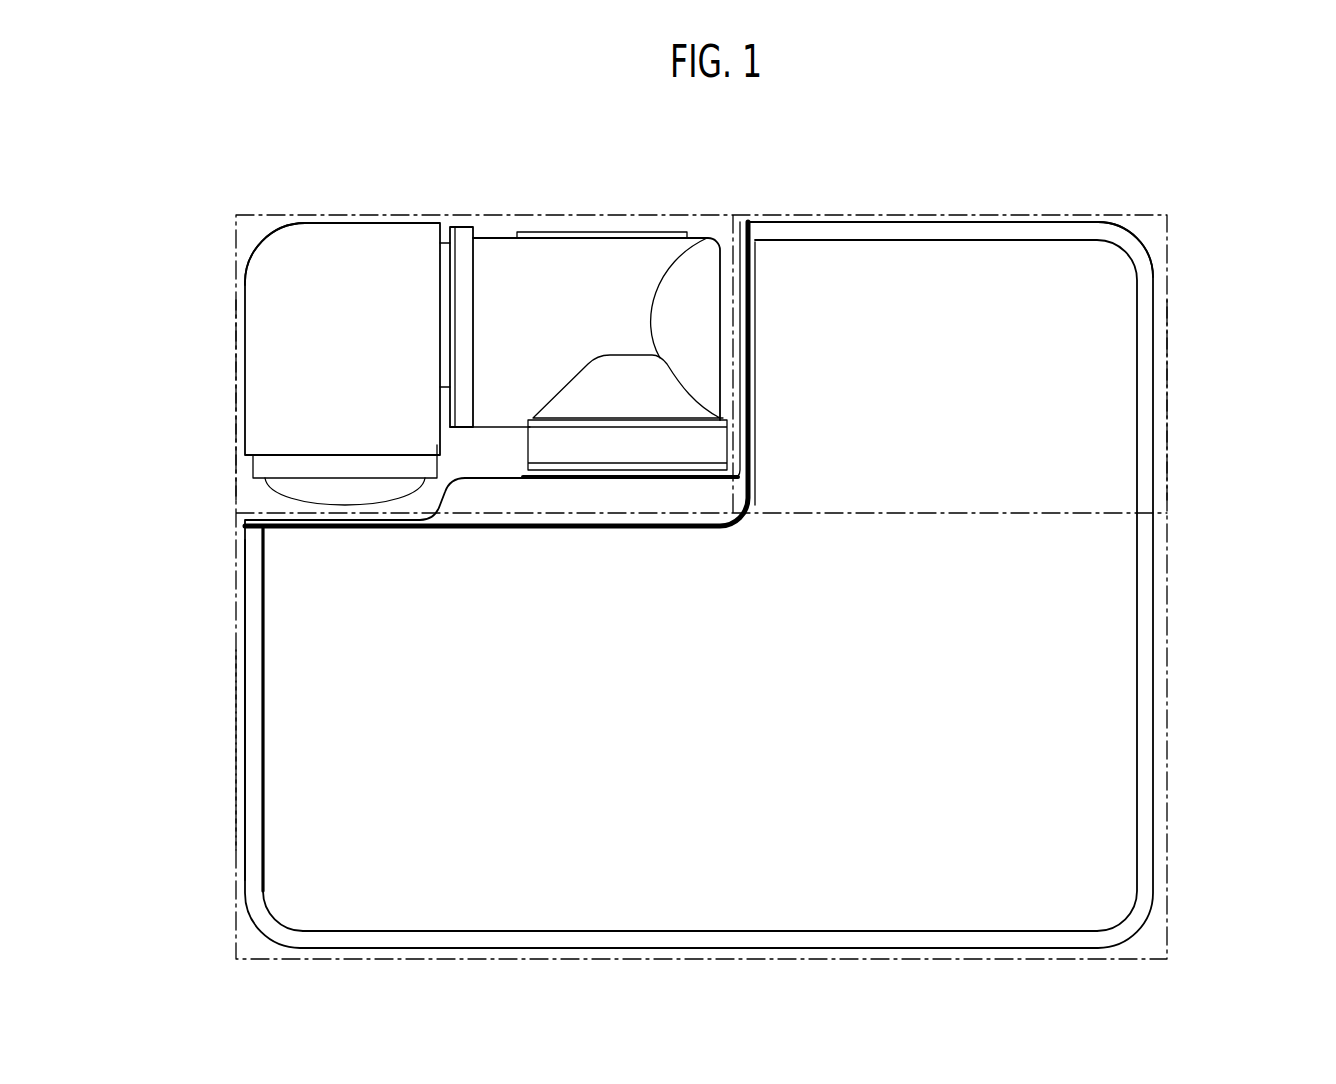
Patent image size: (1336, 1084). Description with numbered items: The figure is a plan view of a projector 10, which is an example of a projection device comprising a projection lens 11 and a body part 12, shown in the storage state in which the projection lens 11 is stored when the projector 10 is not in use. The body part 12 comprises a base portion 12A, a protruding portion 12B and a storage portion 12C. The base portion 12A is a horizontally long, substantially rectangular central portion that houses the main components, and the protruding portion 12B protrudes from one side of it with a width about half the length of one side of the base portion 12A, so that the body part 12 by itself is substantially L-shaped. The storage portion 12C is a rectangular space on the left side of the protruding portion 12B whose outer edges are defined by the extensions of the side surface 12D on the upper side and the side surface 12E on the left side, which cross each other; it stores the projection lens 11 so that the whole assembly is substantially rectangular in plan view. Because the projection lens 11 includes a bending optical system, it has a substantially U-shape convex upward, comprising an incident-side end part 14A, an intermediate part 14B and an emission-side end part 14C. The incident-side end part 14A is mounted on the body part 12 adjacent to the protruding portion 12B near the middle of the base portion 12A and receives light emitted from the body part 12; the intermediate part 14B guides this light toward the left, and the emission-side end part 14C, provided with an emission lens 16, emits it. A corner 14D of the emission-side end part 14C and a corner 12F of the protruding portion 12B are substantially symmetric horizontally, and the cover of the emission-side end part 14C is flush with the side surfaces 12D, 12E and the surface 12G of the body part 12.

The projector 10 is at (880, 173).
The projection lens 11 is at (553, 249).
The body part 12 is at (869, 259).
The base portion 12A is at (235, 737).
The protruding portion 12B is at (1168, 388).
The storage portion 12C is at (235, 385).
The side surface 12D is at (1022, 223).
The side surface 12E is at (245, 625).
The corner 12F is at (1142, 246).
The surface 12G is at (778, 670).
The incident-side end part 14A is at (710, 448).
The intermediate part 14B is at (493, 250).
The emission-side end part 14C is at (362, 250).
The corner 14D is at (245, 243).
The emission lens 16 is at (277, 487).